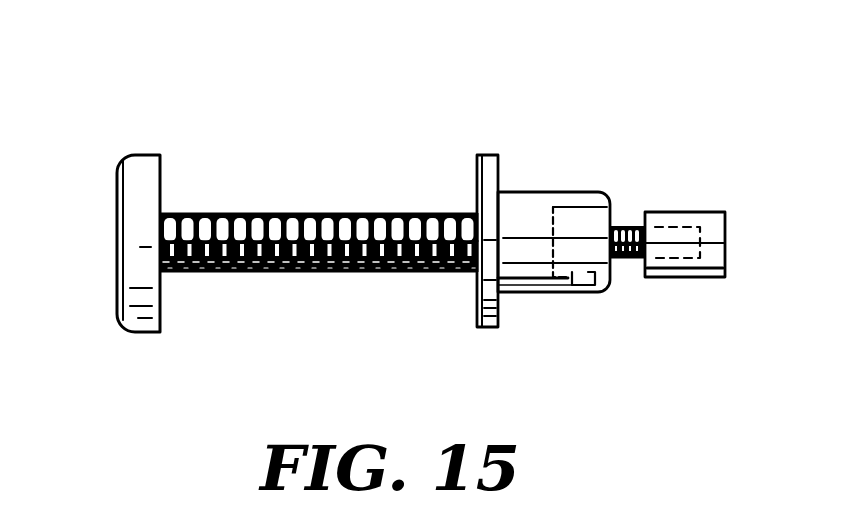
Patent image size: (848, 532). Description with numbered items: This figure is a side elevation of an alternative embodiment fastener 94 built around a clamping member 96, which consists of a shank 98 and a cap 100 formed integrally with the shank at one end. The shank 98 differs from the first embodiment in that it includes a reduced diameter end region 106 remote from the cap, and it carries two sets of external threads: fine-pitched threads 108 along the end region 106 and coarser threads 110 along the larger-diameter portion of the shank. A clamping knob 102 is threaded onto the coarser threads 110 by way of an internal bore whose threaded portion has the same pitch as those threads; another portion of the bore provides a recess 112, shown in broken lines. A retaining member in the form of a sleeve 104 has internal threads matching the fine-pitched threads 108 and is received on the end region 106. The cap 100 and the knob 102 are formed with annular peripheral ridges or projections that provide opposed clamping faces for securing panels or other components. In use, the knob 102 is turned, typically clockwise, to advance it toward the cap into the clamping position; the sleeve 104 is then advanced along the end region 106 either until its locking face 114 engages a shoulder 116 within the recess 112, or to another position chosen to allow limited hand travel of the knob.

The fastener 94 is at (272, 87).
The clamping member 96 is at (157, 245).
The shank 98 is at (317, 273).
The cap 100 is at (132, 317).
The clamping knob 102 is at (520, 190).
The sleeve 104 is at (693, 212).
The reduced diameter end region 106 is at (631, 258).
The fine-pitched threads 108 is at (631, 232).
The coarser threads 110 is at (312, 213).
The recess 112 is at (578, 282).
The locking face 114 is at (645, 268).
The shoulder 116 is at (557, 228).